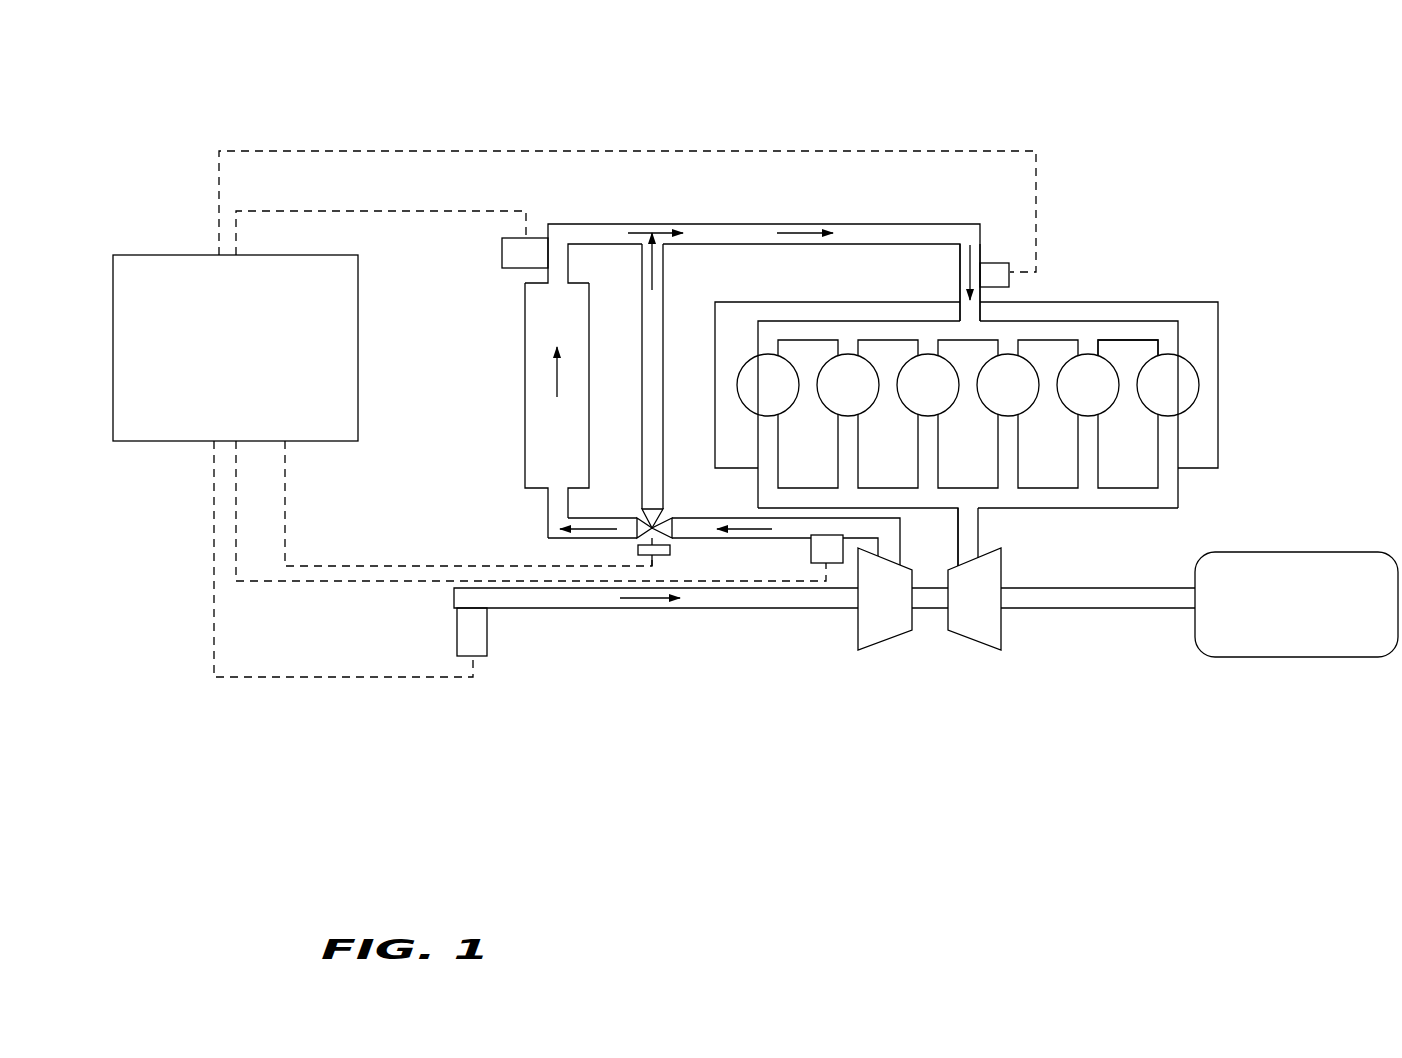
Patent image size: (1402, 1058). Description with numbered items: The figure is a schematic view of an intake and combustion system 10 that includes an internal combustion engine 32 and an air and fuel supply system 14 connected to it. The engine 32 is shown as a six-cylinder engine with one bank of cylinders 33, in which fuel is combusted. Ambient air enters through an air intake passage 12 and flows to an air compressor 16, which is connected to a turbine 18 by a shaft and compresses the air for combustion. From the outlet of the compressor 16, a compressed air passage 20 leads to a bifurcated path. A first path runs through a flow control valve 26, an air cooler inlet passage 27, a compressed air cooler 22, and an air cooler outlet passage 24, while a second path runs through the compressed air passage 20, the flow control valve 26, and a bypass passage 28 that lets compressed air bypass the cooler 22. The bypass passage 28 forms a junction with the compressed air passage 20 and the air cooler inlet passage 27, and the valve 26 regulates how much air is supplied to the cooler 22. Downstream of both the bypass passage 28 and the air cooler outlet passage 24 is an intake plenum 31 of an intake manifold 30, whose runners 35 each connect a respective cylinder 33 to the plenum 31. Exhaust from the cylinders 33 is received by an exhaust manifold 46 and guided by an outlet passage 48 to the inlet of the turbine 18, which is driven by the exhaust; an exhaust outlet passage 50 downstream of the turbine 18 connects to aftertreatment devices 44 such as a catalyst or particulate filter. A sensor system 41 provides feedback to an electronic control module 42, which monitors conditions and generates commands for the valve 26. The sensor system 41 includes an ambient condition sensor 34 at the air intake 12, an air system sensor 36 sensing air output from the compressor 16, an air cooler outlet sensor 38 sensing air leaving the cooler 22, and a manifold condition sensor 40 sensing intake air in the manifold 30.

The intake and combustion system 10 is at (137, 105).
The air intake passage 12 is at (735, 610).
The air and fuel supply system 14 is at (898, 654).
The air compressor 16 is at (889, 625).
The turbine 18 is at (970, 628).
The compressed air passage 20 is at (700, 528).
The compressed air cooler 22 is at (497, 445).
The air cooler outlet passage 24 is at (590, 226).
The flow control valve 26 is at (637, 538).
The air cooler inlet passage 27 is at (548, 525).
The bypass passage 28 is at (657, 300).
The intake manifold 30 is at (960, 278).
The intake plenum 31 is at (893, 330).
The internal combustion engine 32 is at (1015, 402).
The cylinders 33 is at (1173, 373).
The ambient condition sensor 34 is at (485, 625).
The runners 35 is at (1085, 350).
The air system sensor 36 is at (811, 548).
The air cooler outlet sensor 38 is at (497, 266).
The manifold condition sensor 40 is at (992, 262).
The sensor system 41 is at (212, 578).
The electronic control module 42 is at (163, 243).
The aftertreatment devices 44 is at (1275, 652).
The exhaust manifold 46 is at (972, 497).
The outlet passage 48 is at (972, 530).
The exhaust outlet passage 50 is at (1087, 612).